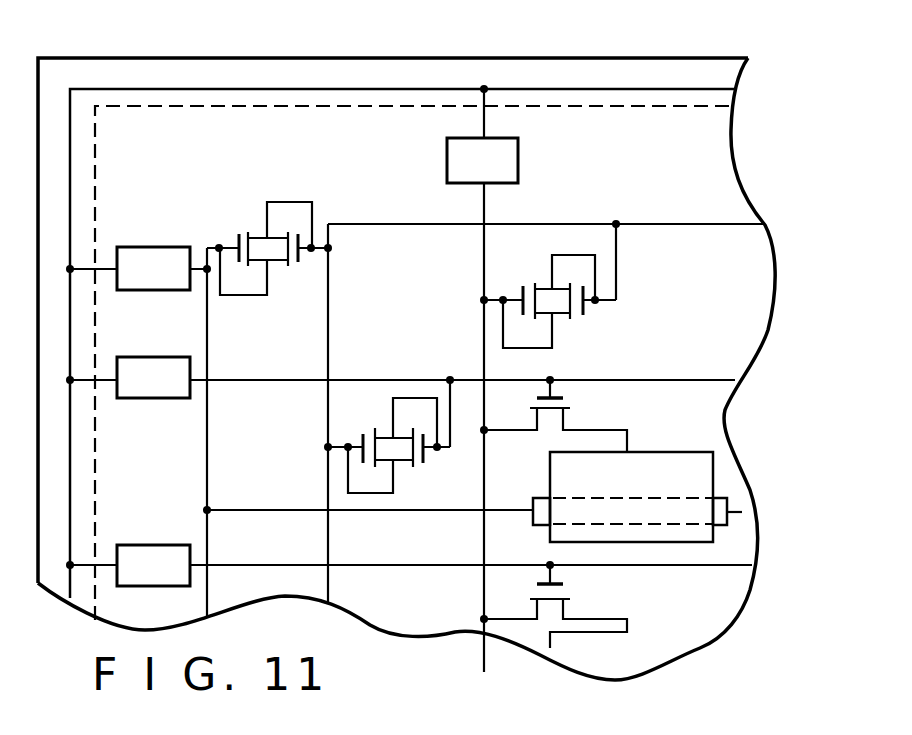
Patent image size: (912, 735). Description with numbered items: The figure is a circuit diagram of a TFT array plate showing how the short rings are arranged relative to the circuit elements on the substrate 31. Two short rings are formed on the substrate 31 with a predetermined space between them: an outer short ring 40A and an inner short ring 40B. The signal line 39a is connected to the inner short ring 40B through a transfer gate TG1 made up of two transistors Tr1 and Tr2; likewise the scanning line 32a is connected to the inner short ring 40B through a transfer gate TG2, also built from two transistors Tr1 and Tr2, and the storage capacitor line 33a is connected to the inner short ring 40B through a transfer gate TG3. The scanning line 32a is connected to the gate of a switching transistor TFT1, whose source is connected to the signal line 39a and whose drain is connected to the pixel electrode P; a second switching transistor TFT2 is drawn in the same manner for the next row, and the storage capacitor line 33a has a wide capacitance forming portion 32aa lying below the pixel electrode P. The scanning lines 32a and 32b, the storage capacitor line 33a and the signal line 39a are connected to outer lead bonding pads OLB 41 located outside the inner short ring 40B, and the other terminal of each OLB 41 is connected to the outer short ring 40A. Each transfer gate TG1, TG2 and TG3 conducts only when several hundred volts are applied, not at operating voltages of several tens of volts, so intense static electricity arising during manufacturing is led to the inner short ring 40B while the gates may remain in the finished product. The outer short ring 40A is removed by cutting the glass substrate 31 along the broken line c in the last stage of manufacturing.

The substrate 31 is at (620, 58).
The outer short ring 40A is at (718, 89).
The inner short ring 40B is at (660, 224).
The outer lead bonding pad 41 is at (519, 158).
The signal line 39a is at (484, 205).
The broken line c is at (713, 107).
The scanning line 32a is at (668, 382).
The storage capacitor line 32aa is at (703, 498).
The storage capacitor line 33a is at (742, 512).
The scanning line 32b is at (682, 566).
The transfer gate TG1 is at (666, 292).
The transfer gate TG2 is at (473, 484).
The transfer gate TG3 is at (269, 252).
The transistor Tr1 is at (505, 277).
The transistor Tr2 is at (577, 342).
The switching transistor TFT1 is at (554, 414).
The thin film transistor TFT2 is at (554, 604).
The pixel electrode P is at (676, 455).